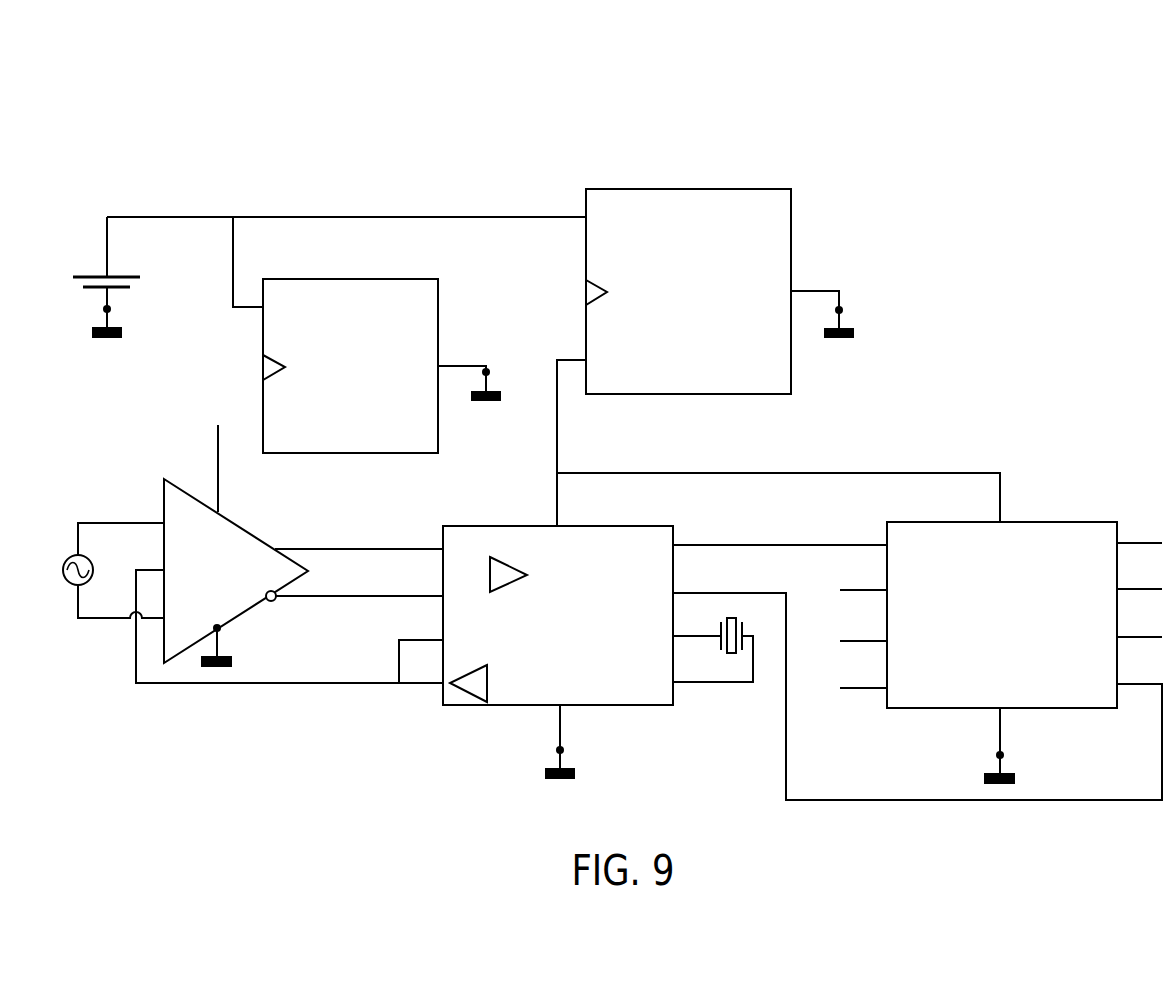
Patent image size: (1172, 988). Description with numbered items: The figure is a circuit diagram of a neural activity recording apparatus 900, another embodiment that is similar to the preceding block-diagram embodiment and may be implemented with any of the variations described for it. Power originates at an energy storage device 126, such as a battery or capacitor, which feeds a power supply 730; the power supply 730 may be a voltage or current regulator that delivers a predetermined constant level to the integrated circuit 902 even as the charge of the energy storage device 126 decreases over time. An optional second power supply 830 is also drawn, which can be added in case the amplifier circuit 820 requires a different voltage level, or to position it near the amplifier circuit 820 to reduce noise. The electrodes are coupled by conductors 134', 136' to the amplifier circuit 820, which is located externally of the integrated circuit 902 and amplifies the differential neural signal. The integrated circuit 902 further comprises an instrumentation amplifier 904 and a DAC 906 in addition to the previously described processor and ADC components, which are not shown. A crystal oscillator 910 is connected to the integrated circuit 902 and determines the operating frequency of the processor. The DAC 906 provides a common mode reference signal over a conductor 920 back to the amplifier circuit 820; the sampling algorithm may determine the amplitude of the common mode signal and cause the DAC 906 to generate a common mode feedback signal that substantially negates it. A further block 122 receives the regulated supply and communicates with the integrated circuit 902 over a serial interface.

The neural activity recording apparatus 900 is at (306, 117).
The energy storage device 126 is at (140, 286).
The second power supply 830 is at (353, 279).
The power supply 730 is at (688, 189).
The amplifier circuit 820 is at (252, 531).
The conductor 134' is at (113, 525).
The conductor 136' is at (121, 630).
The conductor 920 is at (307, 684).
The integrated circuit 902 is at (780, 663).
The instrumentation amplifier 904 is at (500, 585).
The DAC 906 is at (488, 672).
The crystal oscillator 910 is at (727, 655).
The microcontroller 122 is at (1033, 522).